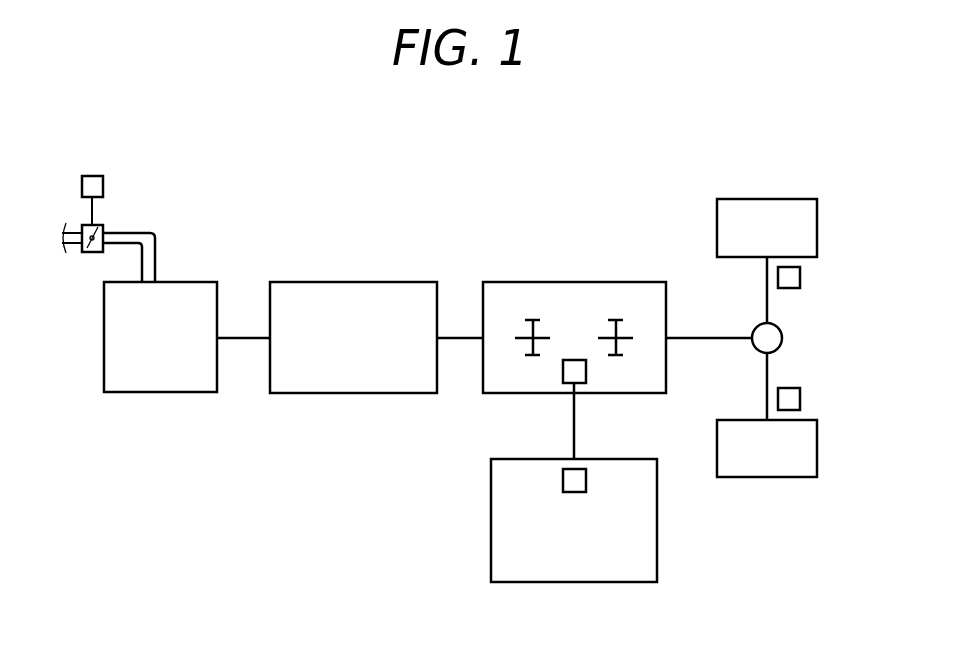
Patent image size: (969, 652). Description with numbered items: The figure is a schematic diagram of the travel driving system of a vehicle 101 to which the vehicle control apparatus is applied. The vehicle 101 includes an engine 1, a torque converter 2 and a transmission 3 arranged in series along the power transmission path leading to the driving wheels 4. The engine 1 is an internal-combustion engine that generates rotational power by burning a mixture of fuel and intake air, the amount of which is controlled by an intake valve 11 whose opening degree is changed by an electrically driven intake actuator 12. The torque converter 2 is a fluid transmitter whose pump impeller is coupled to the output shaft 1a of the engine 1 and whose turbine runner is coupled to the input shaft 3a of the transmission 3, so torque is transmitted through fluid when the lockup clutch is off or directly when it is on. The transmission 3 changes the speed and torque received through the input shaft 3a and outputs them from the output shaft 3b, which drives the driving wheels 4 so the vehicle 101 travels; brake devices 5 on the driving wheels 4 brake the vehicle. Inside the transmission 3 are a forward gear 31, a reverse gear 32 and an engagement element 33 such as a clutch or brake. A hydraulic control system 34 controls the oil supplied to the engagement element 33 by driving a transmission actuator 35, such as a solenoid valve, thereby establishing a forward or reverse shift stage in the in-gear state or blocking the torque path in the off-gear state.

The vehicle 101 is at (576, 155).
The engine 1 is at (192, 282).
The output shaft 1a is at (244, 337).
The torque converter 2 is at (373, 282).
The transmission 3 is at (576, 329).
The input shaft 3a is at (457, 337).
The output shaft 3b is at (700, 337).
The driving wheels 4 is at (793, 199).
The brake devices 5 is at (800, 280).
The intake valve 11 is at (83, 224).
The intake actuator 12 is at (103, 186).
The forward gear 31 is at (533, 355).
The reverse gear 32 is at (616, 355).
The engagement element 33 is at (580, 383).
The hydraulic control system 34 is at (598, 552).
The transmission actuator 35 is at (586, 480).